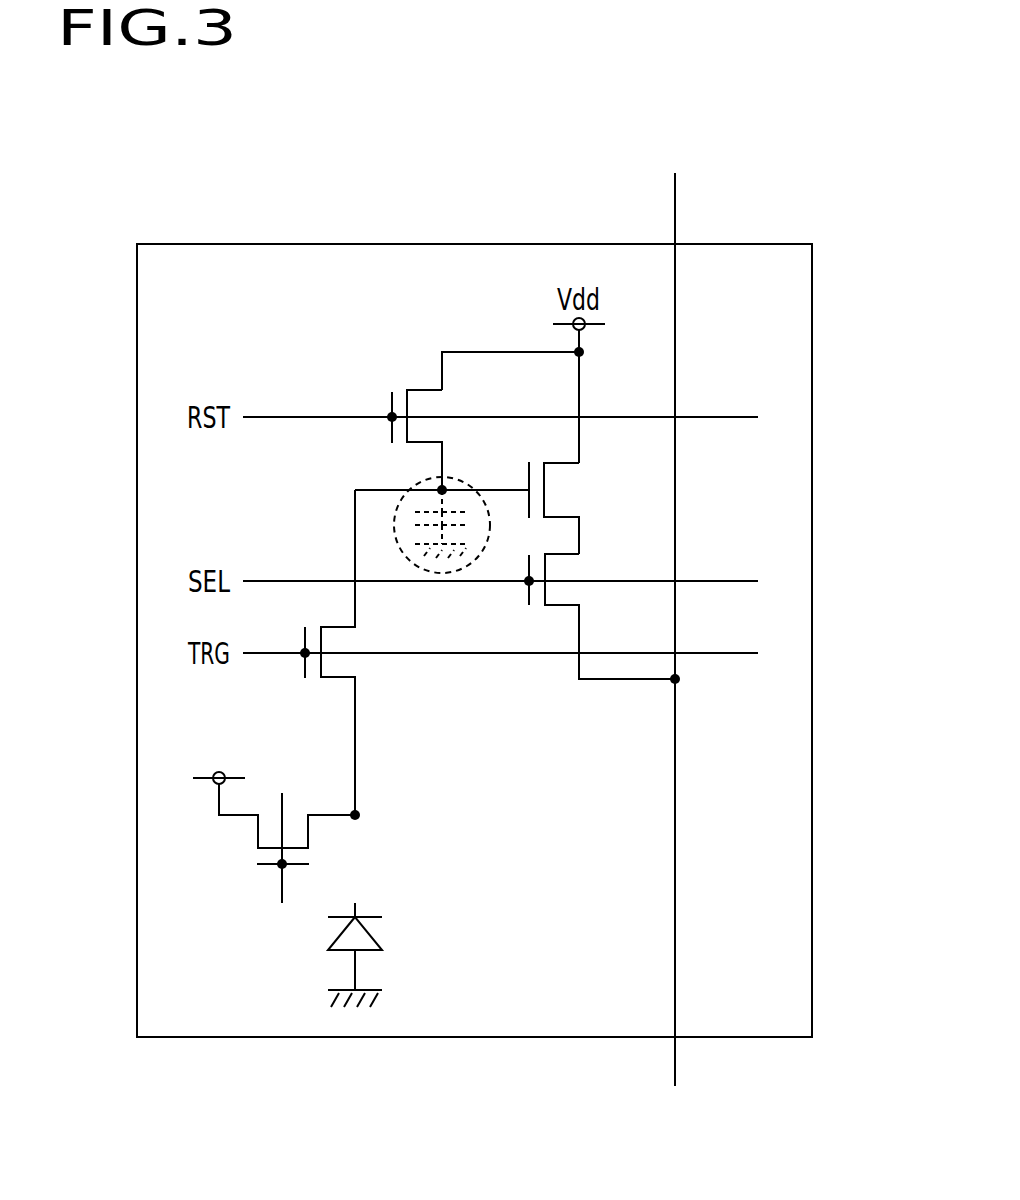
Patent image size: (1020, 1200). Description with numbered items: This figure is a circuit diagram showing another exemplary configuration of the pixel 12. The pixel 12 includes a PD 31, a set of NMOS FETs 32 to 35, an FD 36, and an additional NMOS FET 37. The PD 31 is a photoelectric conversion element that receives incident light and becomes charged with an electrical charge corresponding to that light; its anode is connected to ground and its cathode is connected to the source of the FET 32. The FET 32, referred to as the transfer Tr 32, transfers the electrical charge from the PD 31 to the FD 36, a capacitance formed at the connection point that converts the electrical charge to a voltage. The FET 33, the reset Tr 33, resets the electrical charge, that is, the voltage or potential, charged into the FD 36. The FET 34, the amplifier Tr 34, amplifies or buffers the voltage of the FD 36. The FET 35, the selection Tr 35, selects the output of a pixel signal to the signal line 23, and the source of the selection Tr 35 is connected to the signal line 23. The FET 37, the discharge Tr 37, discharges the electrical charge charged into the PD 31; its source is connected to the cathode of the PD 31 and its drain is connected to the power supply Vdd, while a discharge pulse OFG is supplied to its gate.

The pixel 12 is at (476, 244).
The signal line 23 is at (678, 213).
The PD (photo diode) 31 is at (374, 930).
The transfer Tr 32 is at (318, 670).
The reset Tr 33 is at (405, 392).
The amplifier Tr 34 is at (540, 468).
The selection Tr 35 is at (542, 602).
The FD (floating diffusion) 36 is at (434, 482).
The discharge Tr 37 is at (262, 853).